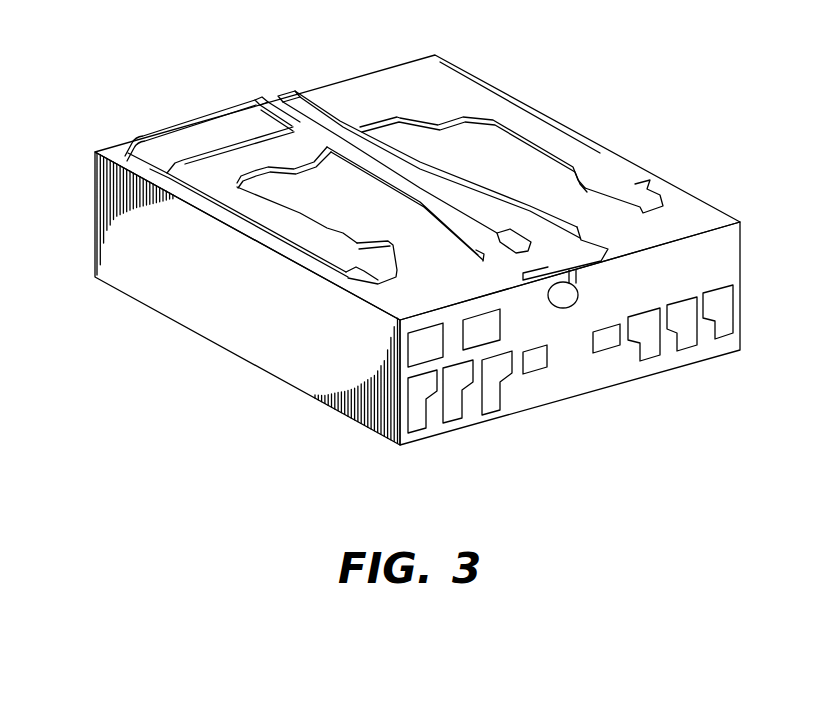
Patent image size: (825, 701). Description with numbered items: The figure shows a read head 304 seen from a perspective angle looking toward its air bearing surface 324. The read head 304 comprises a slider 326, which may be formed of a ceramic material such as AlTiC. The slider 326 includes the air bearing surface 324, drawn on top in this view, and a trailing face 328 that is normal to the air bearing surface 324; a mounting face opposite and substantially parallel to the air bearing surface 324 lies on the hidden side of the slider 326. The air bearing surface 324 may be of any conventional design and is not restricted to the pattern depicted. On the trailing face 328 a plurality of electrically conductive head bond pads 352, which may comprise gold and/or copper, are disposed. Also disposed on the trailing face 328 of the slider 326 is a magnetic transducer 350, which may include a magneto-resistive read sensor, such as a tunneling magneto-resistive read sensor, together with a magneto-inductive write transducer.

The read head 304 is at (596, 96).
The air bearing surface 324 is at (376, 111).
The slider 326 is at (175, 302).
The trailing face 328 is at (577, 382).
The magnetic transducer 350 is at (580, 297).
The head bond pads 352 is at (417, 415).